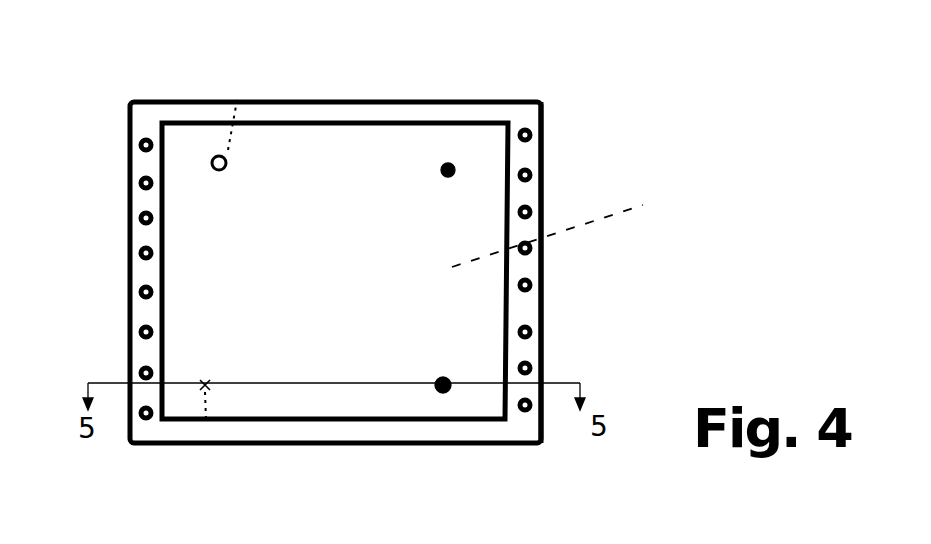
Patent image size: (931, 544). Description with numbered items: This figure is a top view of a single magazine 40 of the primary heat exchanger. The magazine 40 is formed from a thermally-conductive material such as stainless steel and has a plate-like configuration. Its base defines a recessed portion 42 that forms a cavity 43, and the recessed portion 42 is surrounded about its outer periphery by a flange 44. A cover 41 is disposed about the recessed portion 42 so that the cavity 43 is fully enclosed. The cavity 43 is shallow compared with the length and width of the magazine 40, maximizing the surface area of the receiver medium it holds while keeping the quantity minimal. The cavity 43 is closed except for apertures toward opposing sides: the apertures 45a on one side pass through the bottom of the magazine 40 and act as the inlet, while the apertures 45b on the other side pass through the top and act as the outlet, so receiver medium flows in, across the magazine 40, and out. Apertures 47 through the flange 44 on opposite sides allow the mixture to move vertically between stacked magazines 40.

The magazine 40 is at (462, 80).
The cover 41 is at (468, 320).
The recessed portion 42 is at (345, 103).
The cavity 43 is at (571, 223).
The flange 44 is at (525, 353).
The inlet apertures 45a is at (236, 82).
The outlet apertures 45b is at (448, 170).
The apertures 47 is at (140, 243).